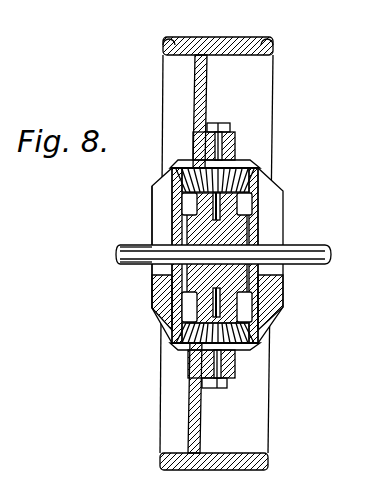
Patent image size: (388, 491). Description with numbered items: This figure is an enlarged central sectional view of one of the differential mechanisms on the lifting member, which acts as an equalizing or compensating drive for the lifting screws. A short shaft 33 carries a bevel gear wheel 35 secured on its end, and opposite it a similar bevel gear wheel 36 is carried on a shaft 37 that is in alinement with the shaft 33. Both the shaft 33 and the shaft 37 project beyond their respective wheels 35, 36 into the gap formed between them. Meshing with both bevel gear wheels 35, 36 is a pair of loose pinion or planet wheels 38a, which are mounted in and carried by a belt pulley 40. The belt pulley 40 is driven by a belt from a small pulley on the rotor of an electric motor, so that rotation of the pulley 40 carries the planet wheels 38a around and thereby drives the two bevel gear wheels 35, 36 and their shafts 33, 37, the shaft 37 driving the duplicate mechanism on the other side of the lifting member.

The short shaft 33 is at (300, 248).
The bevel gear wheel 35 is at (283, 206).
The bevel gear wheel 36 is at (152, 203).
The shaft 37 is at (134, 264).
The planet wheels 38a is at (243, 167).
The belt pulley 40 is at (257, 80).